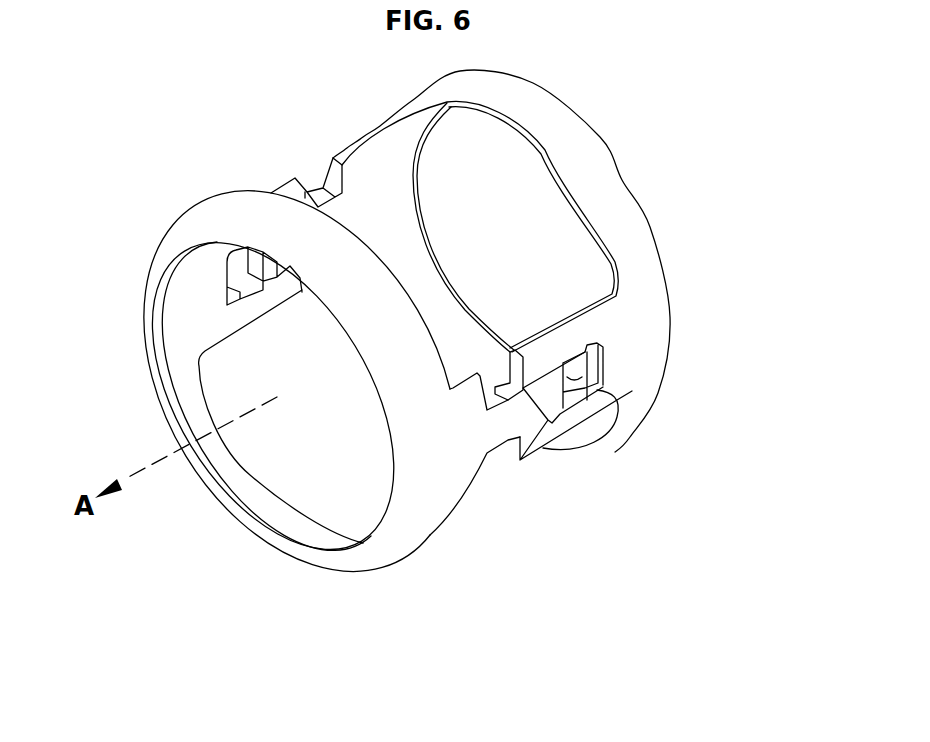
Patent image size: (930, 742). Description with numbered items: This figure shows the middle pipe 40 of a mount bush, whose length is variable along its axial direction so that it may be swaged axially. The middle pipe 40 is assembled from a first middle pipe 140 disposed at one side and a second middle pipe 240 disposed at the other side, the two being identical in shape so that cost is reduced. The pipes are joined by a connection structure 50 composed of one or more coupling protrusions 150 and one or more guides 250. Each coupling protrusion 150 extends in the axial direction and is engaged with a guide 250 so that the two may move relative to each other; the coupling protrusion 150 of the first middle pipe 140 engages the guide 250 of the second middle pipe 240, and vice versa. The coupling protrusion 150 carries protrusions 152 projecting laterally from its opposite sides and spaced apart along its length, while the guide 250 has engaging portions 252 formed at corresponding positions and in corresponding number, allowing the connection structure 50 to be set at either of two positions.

The middle pipe 40 is at (631, 143).
The connection structure 50 is at (300, 152).
The first middle pipe 140 is at (410, 517).
The coupling protrusion 150 is at (506, 425).
The protrusion 152 is at (502, 350).
The second middle pipe 240 is at (640, 333).
The guide 250 is at (578, 380).
The engaging portion 252 is at (583, 384).